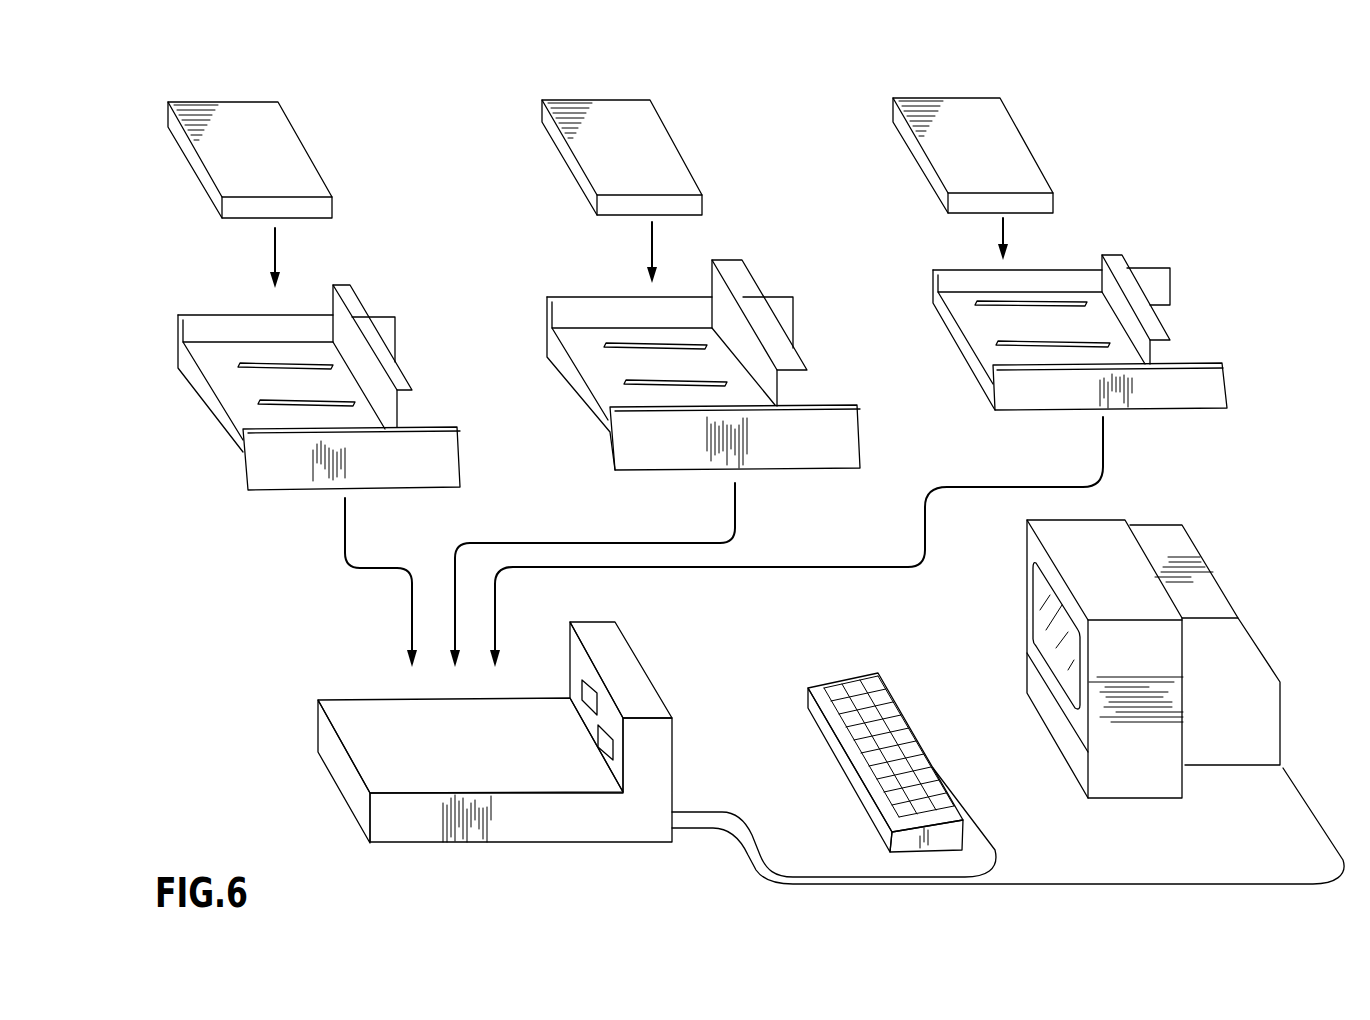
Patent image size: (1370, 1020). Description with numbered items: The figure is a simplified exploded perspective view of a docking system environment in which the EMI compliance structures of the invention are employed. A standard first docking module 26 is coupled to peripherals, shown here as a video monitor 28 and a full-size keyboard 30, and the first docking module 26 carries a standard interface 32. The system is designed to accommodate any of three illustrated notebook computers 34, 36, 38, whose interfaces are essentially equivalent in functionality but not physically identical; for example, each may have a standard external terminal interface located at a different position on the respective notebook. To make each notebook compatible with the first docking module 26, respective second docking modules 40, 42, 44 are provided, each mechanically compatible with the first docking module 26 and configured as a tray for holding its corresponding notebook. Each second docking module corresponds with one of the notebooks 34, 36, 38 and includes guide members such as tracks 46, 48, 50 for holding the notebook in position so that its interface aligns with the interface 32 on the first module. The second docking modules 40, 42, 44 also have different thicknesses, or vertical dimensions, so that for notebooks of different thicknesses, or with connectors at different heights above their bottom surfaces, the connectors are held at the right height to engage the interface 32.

The first docking module 26 is at (473, 729).
The video monitor 28 is at (1165, 538).
The full-size keyboard 30 is at (823, 690).
The standard interface 32 is at (601, 690).
The notebook computer 34 is at (230, 120).
The notebook computer 36 is at (598, 118).
The notebook computer 38 is at (945, 105).
The second docking module 40 is at (303, 421).
The second docking module 42 is at (698, 388).
The second docking module 44 is at (1067, 346).
The tracks 46 is at (290, 370).
The tracks 48 is at (667, 350).
The tracks 50 is at (977, 308).